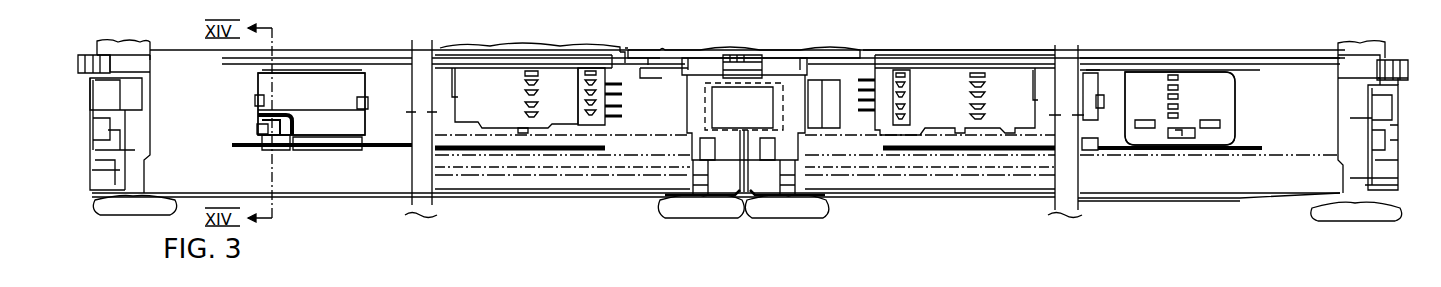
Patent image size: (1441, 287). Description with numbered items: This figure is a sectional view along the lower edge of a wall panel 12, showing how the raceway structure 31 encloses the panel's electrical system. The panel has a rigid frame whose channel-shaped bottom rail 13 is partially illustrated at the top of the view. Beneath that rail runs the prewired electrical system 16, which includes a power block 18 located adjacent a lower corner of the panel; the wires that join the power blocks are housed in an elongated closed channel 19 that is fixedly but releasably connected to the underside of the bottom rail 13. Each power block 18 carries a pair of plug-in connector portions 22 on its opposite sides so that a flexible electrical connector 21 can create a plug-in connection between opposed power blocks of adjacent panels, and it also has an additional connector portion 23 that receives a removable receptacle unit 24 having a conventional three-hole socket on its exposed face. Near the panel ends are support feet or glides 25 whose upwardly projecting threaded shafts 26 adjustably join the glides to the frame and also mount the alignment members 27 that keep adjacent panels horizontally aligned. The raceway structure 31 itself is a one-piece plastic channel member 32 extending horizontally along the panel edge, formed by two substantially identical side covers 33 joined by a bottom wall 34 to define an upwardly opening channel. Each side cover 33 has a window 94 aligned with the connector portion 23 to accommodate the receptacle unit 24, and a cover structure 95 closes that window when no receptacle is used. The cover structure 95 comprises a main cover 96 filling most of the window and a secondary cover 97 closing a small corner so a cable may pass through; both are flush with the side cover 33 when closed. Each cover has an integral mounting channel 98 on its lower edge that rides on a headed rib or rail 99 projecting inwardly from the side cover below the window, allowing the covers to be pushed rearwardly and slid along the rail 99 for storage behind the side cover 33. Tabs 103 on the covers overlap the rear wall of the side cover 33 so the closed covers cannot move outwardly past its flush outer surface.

The panel 12 is at (386, 285).
The bottom rail 13 is at (505, 50).
The prewired electrical system 16 is at (535, 170).
The power block 18 is at (474, 76).
The elongated closed channel 19 is at (441, 62).
The flexible electrical connector 21 is at (652, 95).
The plug-in connector portion 22 is at (590, 66).
The additional connector portion 23 is at (537, 82).
The receptacle unit 24 is at (1203, 85).
The support foot or glide 25 is at (127, 207).
The threaded shaft 26 is at (790, 175).
The alignment member 27 is at (748, 66).
The raceway structure 31 is at (985, 202).
The channel member 32 is at (1247, 200).
The side cover 33 is at (1190, 190).
The bottom wall 34 is at (1158, 200).
The window 94 is at (1226, 98).
The cover structure 95 is at (354, 74).
The main cover 96 is at (326, 80).
The secondary cover 97 is at (280, 112).
The mounting channel 98 is at (335, 152).
The headed rib or rail 99 is at (380, 152).
The tab 103 is at (366, 103).